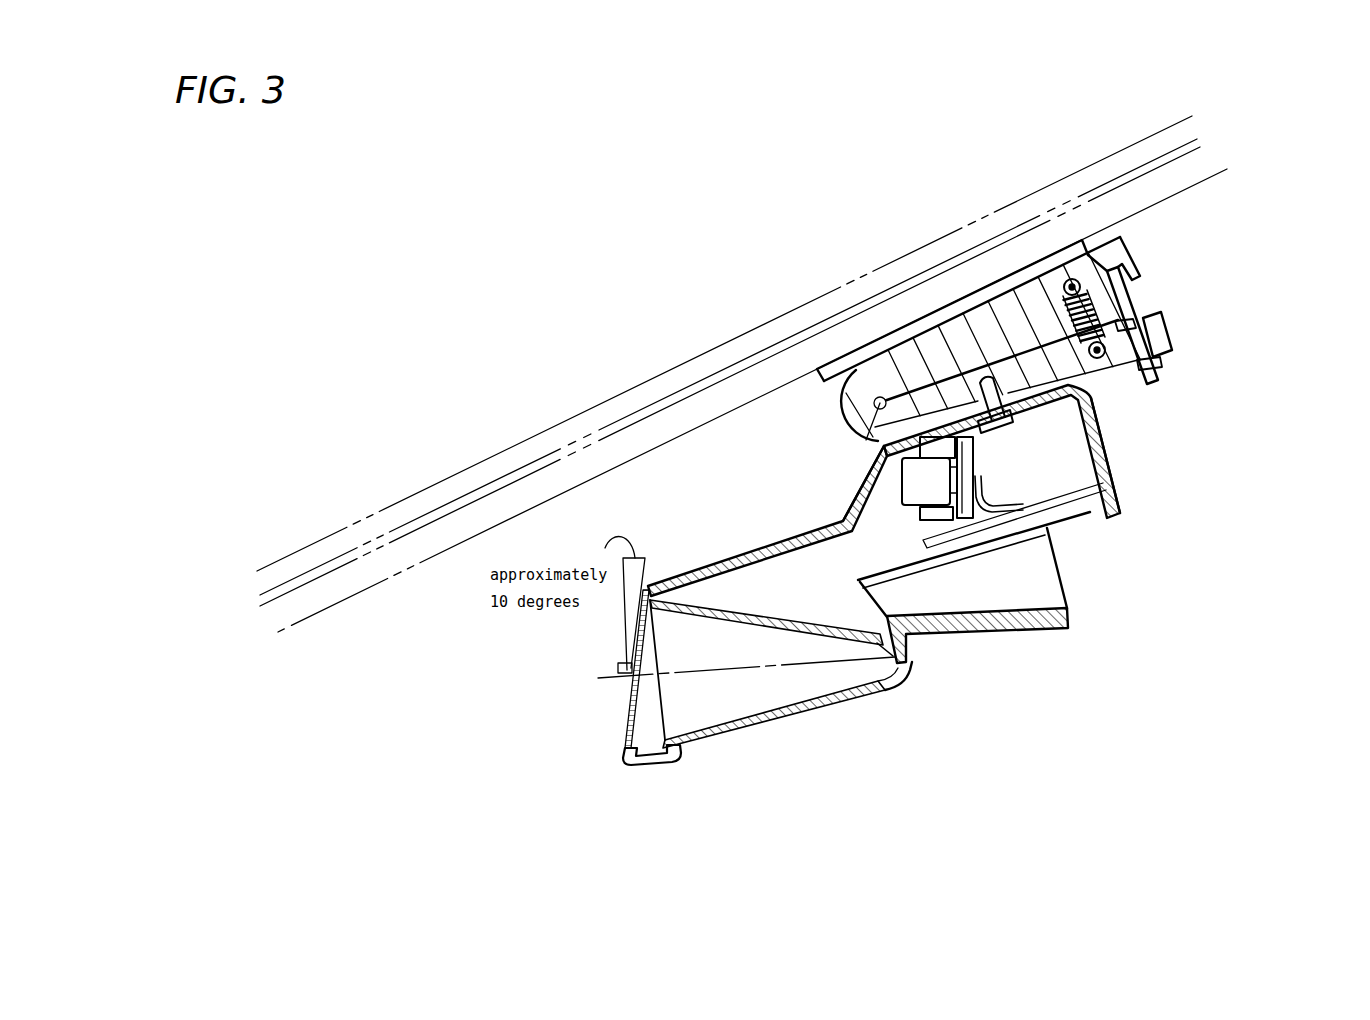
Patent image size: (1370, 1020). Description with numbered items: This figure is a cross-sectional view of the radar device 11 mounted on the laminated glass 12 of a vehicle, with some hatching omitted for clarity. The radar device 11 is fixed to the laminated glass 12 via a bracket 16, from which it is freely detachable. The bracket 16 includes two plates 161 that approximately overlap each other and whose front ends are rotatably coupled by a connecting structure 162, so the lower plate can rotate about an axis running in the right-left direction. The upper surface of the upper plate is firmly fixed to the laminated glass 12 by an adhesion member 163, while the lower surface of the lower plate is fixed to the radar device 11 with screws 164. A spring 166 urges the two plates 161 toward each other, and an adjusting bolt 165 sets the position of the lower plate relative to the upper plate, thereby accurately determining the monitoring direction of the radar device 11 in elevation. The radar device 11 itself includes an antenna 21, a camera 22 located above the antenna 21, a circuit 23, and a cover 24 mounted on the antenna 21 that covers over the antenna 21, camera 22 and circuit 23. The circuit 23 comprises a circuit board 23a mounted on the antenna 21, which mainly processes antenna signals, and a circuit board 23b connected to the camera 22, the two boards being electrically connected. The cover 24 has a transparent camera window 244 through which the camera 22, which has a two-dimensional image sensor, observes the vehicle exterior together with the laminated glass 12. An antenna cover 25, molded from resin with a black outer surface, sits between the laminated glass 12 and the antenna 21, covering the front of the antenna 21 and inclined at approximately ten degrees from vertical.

The radar device 11 is at (1136, 636).
The laminated glass 12 is at (823, 292).
The bracket 16 is at (1318, 208).
The plates 161 is at (1125, 256).
The connecting structure 162 is at (853, 430).
The adhesion member 163 is at (825, 384).
The screws 164 is at (1008, 419).
The adjusting bolt 165 is at (1124, 292).
The spring 166 is at (1104, 312).
The antenna 21 is at (940, 690).
The camera 22 is at (975, 470).
The circuit 23 is at (1229, 520).
The circuit board 23a is at (1095, 514).
The circuit board 23b is at (1121, 506).
The cover 24 is at (757, 557).
The camera window 244 is at (858, 493).
The antenna cover 25 is at (630, 707).